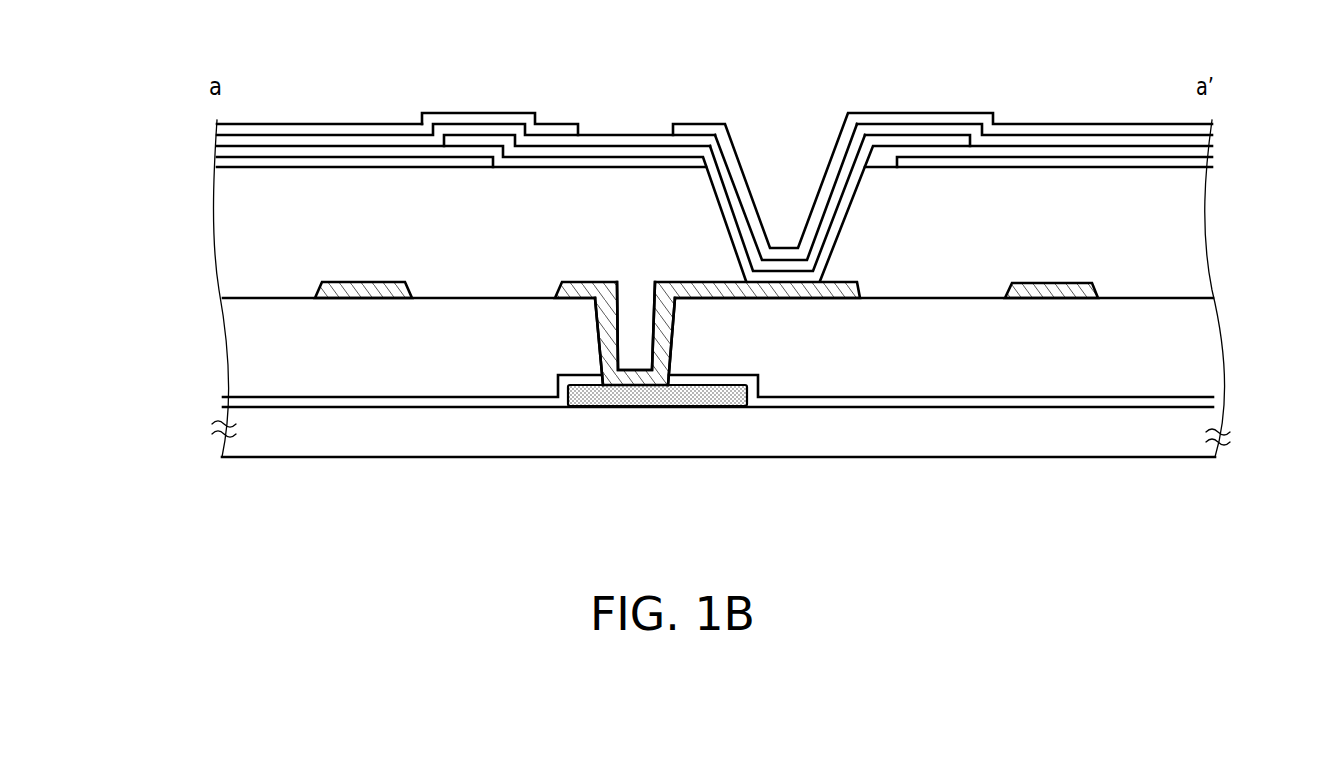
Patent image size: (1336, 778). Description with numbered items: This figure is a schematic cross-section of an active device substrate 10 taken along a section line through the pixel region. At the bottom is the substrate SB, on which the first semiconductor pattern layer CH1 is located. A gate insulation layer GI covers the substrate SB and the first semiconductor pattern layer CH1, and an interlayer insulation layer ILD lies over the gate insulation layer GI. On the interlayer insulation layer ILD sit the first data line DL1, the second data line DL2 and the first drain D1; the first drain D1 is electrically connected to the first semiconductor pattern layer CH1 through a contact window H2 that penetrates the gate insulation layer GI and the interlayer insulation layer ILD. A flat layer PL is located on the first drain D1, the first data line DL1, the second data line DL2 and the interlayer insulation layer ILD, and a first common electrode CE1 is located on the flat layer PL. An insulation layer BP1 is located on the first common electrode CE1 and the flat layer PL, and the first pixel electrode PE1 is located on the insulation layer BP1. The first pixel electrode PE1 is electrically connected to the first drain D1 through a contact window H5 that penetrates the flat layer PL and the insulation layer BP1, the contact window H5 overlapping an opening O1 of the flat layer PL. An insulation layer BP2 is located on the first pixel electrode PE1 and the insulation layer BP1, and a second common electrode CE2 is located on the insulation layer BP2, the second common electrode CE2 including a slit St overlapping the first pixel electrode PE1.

The active device substrate 10 is at (1240, 538).
The substrate SB is at (238, 444).
The gate insulation layer GI is at (242, 398).
The interlayer insulation layer ILD is at (240, 335).
The first semiconductor pattern layer CH1 is at (722, 400).
The first data line DL1 is at (367, 290).
The second data line DL2 is at (1052, 292).
The first drain D1 is at (808, 292).
The contact window H2 is at (667, 341).
The flat layer PL is at (226, 230).
The first common electrode CE1 is at (224, 162).
The insulation layer BP1 is at (224, 151).
The contact window H5 is at (836, 231).
The insulation layer BP2 is at (224, 140).
The opening O1 is at (735, 231).
The second common electrode CE2 is at (224, 130).
The slit St is at (584, 127).
The first pixel electrode PE1 is at (877, 146).